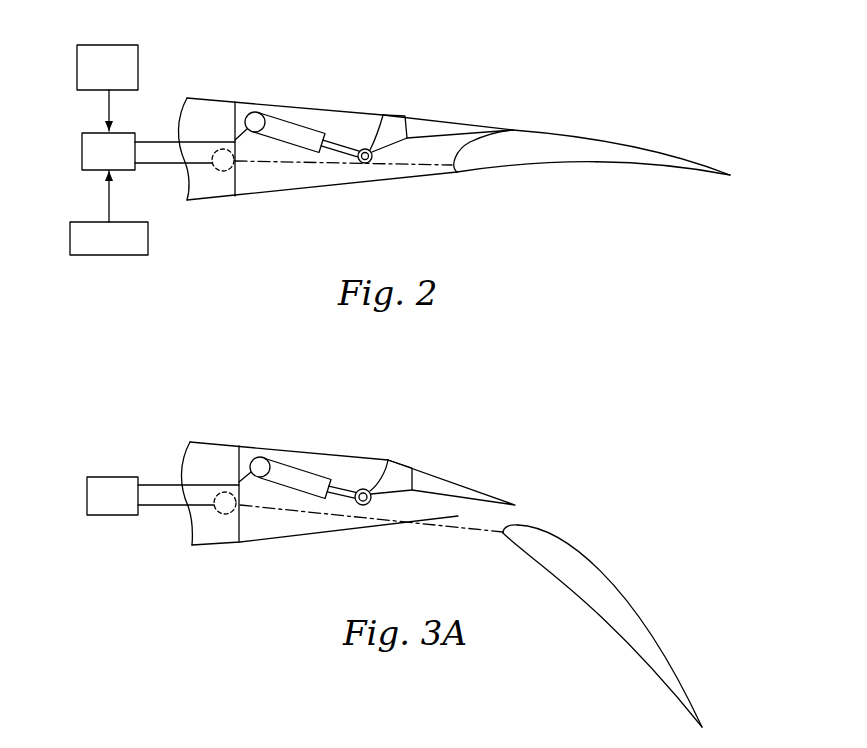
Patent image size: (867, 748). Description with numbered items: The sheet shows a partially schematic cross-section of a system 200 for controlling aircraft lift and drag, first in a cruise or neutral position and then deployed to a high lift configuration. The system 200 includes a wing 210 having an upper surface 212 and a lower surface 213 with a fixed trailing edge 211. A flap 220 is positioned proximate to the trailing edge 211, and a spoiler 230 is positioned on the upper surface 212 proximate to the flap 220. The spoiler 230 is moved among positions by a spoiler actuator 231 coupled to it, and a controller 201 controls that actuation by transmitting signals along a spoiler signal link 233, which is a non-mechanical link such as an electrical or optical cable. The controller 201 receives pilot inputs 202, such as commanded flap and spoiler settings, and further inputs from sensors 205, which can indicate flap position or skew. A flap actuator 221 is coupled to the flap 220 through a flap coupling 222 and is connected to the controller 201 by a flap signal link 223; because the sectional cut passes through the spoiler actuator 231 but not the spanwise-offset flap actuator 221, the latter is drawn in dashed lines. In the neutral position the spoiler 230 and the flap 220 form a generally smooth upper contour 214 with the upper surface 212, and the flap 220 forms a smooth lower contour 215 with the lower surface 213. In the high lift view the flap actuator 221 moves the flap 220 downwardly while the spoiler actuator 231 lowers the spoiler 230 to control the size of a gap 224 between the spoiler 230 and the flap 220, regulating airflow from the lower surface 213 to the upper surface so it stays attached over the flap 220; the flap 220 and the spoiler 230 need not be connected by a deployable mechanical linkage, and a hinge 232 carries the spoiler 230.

In FIG. 2, the system for controlling aircraft lift and drag 200 is at (613, 58).
In FIG. 3A, the system for controlling aircraft lift and drag 200 is at (525, 414).
In FIG. 2, the controller 201 is at (82, 147).
In FIG. 3A, the controller 201 is at (105, 477).
In FIG. 2, the pilot inputs 202 is at (97, 44).
In FIG. 2, the sensors 205 is at (92, 255).
In FIG. 2, the wing 210 is at (202, 110).
In FIG. 2, the fixed trailing edge 211 is at (441, 182).
In FIG. 2, the upper surface 212 is at (273, 100).
In FIG. 2, the lower surface 213 is at (200, 200).
In FIG. 2, the upper contour 214 is at (493, 115).
In FIG. 2, the lower contour 215 is at (476, 184).
In FIG. 2, the flap 220 is at (634, 147).
In FIG. 3A, the flap 220 is at (633, 611).
In FIG. 2, the flap actuator 221 is at (226, 171).
In FIG. 3A, the flap actuator 221 is at (228, 514).
In FIG. 3A, the flap coupling 222 is at (437, 530).
In FIG. 2, the flap signal link 223 is at (155, 165).
In FIG. 3A, the gap 224 is at (539, 511).
In FIG. 2, the spoiler 230 is at (435, 116).
In FIG. 3A, the spoiler 230 is at (450, 481).
In FIG. 2, the spoiler actuator 231 is at (303, 133).
In FIG. 3A, the spoiler actuator 231 is at (308, 470).
In FIG. 3A, the spoiler hinge 232 is at (352, 488).
In FIG. 2, the spoiler signal link 233 is at (157, 141).